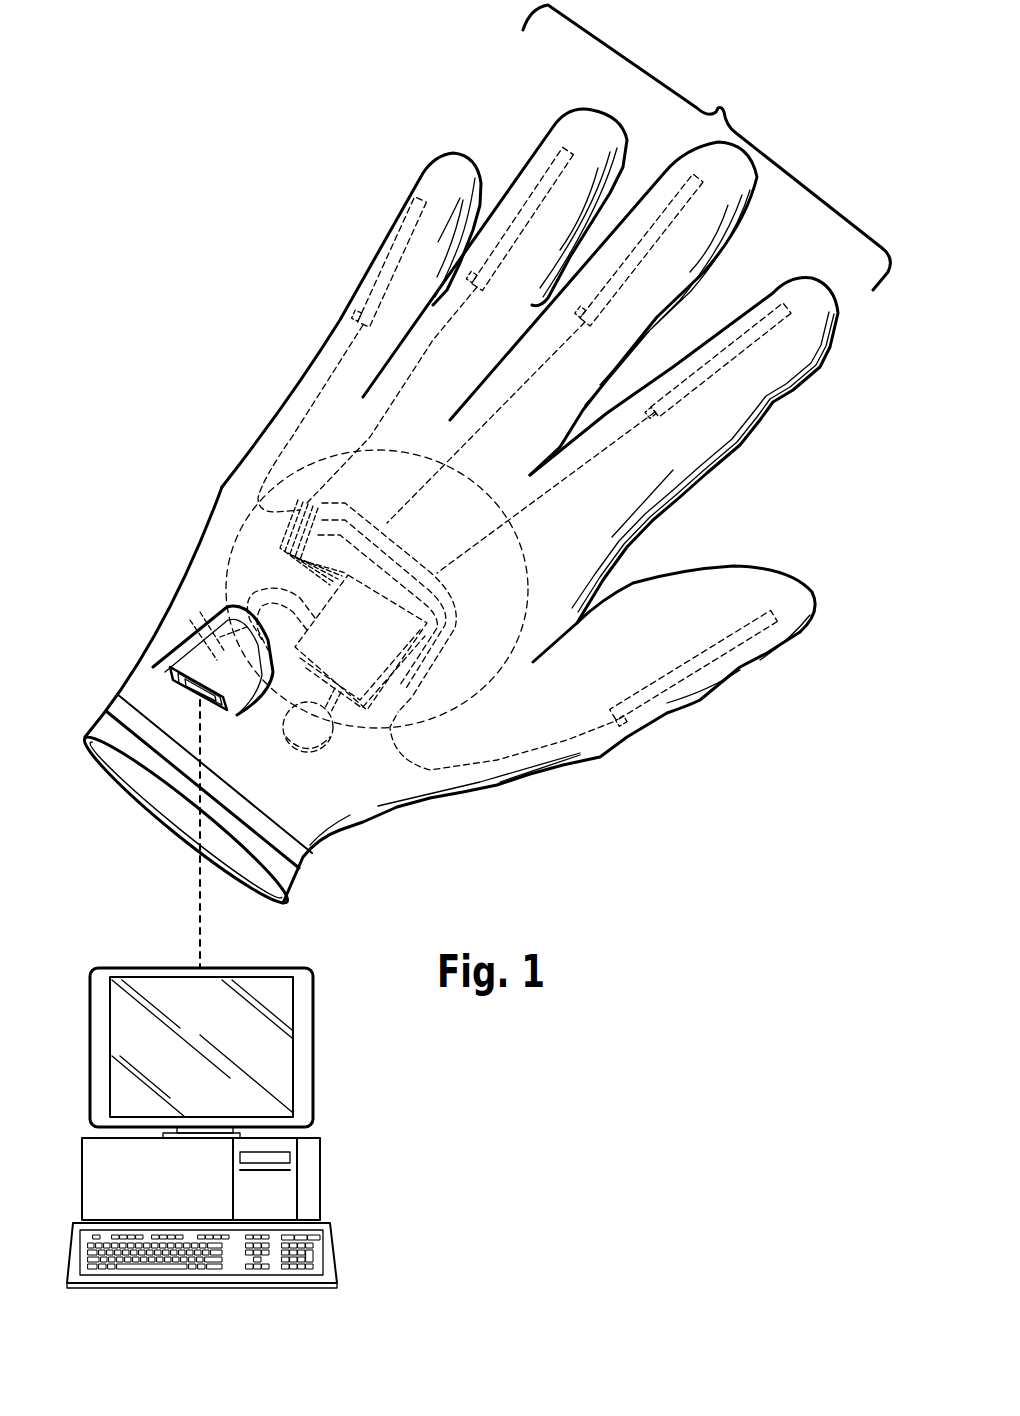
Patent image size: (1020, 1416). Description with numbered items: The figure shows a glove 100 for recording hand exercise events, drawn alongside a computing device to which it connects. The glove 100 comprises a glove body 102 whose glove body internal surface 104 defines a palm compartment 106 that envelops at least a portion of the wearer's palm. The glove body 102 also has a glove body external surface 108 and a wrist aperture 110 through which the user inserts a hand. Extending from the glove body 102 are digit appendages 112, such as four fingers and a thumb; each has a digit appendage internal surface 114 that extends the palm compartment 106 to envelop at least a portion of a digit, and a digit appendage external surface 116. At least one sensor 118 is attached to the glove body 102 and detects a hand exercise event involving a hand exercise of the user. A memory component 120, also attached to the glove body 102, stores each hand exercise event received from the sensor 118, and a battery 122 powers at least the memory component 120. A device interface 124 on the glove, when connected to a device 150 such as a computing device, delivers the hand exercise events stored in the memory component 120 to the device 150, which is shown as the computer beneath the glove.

The glove 100 is at (190, 337).
The glove body 102 is at (223, 487).
The glove body internal surface 104 is at (122, 763).
The palm compartment 106 is at (310, 423).
The glove body external surface 108 is at (218, 514).
The wrist aperture 110 is at (170, 830).
The digit appendages 112 is at (727, 106).
The digit appendage internal surface 114 is at (722, 568).
The digit appendage external surface 116 is at (722, 422).
The sensor 118 is at (772, 323).
The memory component 120 is at (373, 657).
The battery 122 is at (303, 730).
The device interface 124 is at (213, 660).
The device 150 is at (323, 1170).